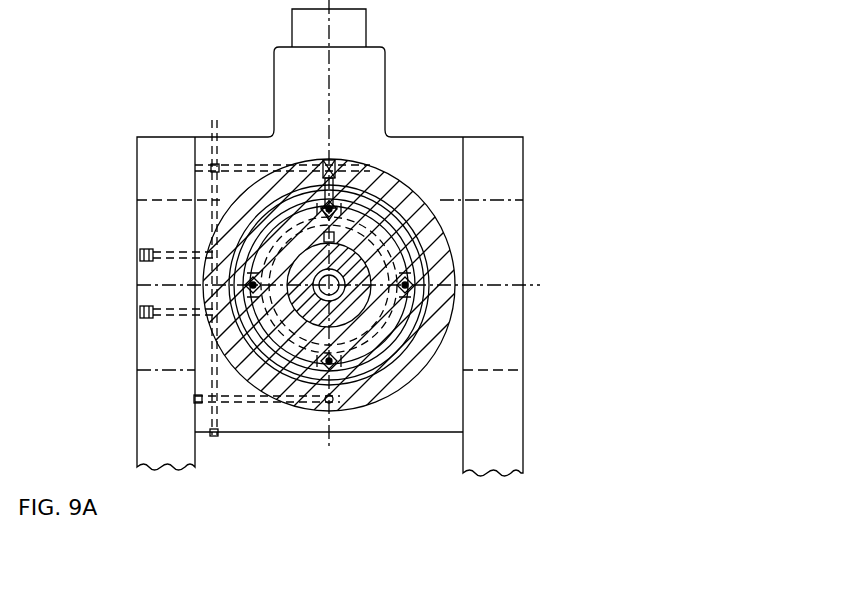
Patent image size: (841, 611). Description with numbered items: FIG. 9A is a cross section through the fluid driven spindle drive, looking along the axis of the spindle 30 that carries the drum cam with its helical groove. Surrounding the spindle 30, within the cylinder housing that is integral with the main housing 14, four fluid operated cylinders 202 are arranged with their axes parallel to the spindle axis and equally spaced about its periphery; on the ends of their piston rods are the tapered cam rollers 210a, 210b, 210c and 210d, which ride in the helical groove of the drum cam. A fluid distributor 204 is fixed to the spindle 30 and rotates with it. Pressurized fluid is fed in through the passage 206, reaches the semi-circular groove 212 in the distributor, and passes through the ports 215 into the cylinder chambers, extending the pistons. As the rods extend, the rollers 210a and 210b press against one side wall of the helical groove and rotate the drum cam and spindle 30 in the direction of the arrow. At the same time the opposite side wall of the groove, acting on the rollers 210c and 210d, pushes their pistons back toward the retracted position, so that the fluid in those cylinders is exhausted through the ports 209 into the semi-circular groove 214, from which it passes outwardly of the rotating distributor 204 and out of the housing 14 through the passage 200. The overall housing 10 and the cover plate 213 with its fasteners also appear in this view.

The housing body 10 is at (523, 183).
The main housing 14 is at (386, 68).
The spindle 30 is at (443, 232).
The passage 200 is at (140, 255).
The fluid operated cylinders 202 is at (372, 190).
The fluid distributor 204 is at (420, 300).
The passage 206 is at (140, 312).
The ports 209 is at (370, 256).
The tapered cam roller 210a is at (363, 377).
The tapered cam roller 210b is at (413, 318).
The tapered cam roller 210c is at (430, 200).
The tapered cam roller 210d is at (210, 325).
The semi-circular groove 212 is at (515, 185).
The cover plate 213 is at (262, 393).
The semi-circular groove 214 is at (195, 238).
The ports 215 is at (427, 266).